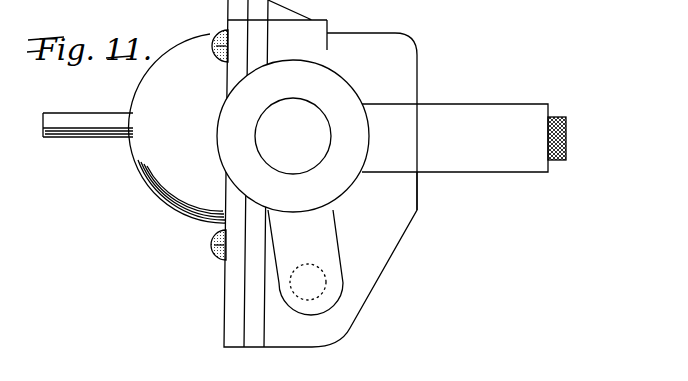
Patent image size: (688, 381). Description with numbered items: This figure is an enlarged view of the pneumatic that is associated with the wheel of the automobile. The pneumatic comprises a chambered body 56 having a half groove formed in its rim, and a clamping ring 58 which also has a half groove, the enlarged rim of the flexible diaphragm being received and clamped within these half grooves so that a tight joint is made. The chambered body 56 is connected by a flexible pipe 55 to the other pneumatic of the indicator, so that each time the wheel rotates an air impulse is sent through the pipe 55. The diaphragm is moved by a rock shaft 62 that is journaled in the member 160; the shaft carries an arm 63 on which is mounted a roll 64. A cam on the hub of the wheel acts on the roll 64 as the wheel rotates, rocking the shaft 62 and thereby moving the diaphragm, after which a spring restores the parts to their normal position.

The flexible pipe 55 is at (80, 129).
The chambered body 56 is at (190, 188).
The clamping ring 58 is at (260, 288).
The rock shaft 62 is at (340, 288).
The arm 63 is at (326, 232).
The roll 64 is at (333, 87).
The member 160 is at (388, 207).